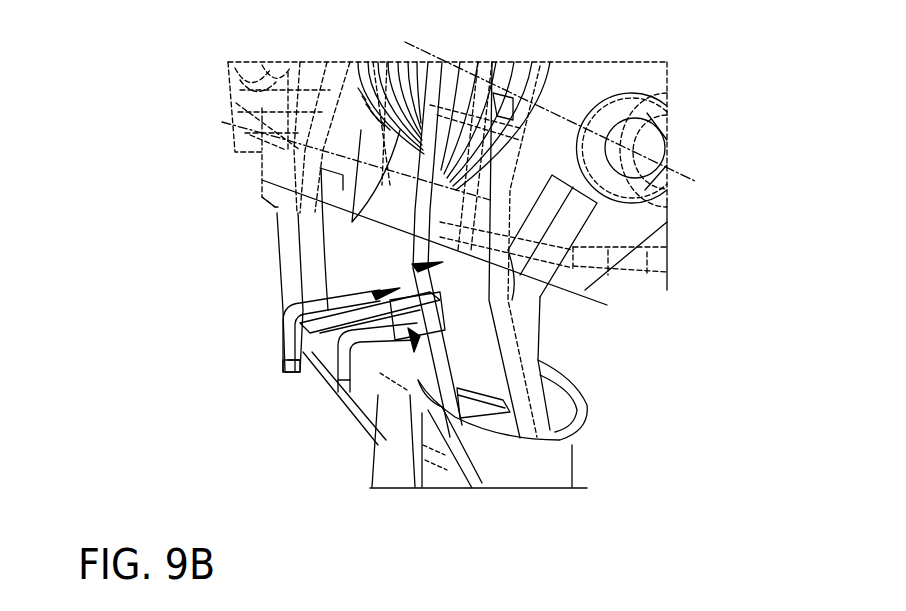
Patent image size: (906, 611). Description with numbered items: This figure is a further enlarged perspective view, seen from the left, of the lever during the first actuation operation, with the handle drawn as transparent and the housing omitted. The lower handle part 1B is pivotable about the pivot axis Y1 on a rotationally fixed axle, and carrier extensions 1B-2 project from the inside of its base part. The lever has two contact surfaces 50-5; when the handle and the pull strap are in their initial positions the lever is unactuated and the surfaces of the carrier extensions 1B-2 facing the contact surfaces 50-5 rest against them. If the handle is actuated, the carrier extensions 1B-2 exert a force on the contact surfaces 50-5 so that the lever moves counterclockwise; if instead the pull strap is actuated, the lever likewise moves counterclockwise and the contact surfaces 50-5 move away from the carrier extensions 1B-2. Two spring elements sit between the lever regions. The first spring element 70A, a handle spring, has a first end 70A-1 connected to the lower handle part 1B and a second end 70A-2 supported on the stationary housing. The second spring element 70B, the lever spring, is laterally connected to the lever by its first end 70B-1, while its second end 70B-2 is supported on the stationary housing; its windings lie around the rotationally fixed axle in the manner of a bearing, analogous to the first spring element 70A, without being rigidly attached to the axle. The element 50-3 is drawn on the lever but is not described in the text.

The lower handle part 1B is at (244, 126).
The carrier extensions 1B-2 is at (274, 205).
The pivot axis Y1 is at (569, 120).
The second spring element 70B is at (378, 78).
The first spring element 70A is at (490, 77).
The first end of first spring element 70A-1 is at (423, 205).
The contact surfaces 50-5 is at (342, 85).
The first end of second spring element 70B-1 is at (374, 295).
The second end of second spring element 70B-2 is at (292, 352).
The second end of first spring element 70A-2 is at (343, 383).
The bracket base portion 50-3 is at (395, 468).